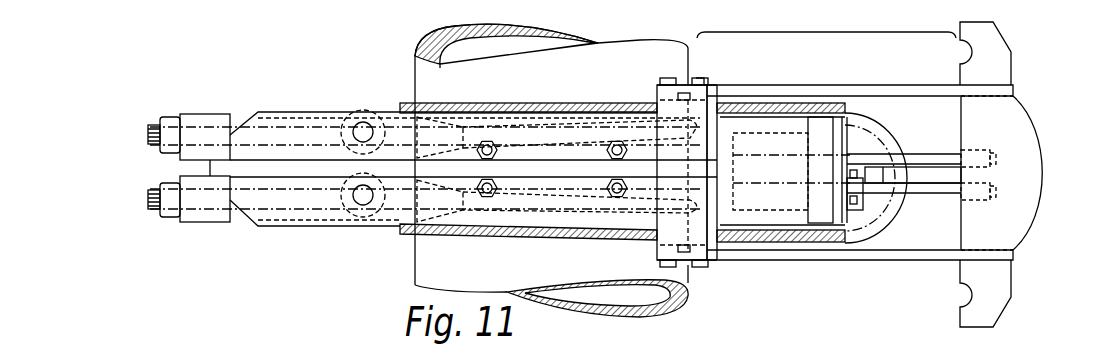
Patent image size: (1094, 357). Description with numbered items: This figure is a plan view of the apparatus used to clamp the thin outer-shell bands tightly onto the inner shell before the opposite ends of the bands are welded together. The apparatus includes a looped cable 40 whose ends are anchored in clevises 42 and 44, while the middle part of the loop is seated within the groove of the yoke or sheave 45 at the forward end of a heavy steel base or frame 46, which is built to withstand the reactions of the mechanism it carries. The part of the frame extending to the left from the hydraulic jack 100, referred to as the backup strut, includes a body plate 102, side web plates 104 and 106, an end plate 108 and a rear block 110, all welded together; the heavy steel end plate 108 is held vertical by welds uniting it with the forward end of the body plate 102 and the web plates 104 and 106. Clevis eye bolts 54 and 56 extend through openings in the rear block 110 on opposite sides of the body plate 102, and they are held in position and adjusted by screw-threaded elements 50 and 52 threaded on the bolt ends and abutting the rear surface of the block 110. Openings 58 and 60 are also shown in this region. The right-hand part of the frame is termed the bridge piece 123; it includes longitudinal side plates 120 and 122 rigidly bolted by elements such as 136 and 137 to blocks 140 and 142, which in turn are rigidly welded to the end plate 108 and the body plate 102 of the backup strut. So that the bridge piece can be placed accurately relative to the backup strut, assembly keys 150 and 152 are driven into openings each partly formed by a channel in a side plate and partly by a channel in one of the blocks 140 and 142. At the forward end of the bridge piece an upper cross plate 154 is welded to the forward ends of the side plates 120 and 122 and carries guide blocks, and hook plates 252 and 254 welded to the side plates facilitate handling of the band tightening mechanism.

The looped cable 40 is at (778, 106).
The clevis 42 is at (453, 234).
The clevis 44 is at (462, 114).
The yoke or sheave 45 is at (876, 138).
The base or frame 46 is at (919, 252).
The screw-threaded element 50 is at (172, 118).
The screw-threaded element 52 is at (172, 218).
The clevis eye bolt 54 is at (272, 125).
The clevis eye bolt 56 is at (262, 220).
The lower opening 58 is at (364, 218).
The upper opening 60 is at (365, 130).
The hydraulic jack 100 is at (780, 220).
The body plate 102 is at (540, 183).
The side web plate 104 is at (318, 228).
The side web plate 106 is at (256, 112).
The end plate 108 is at (712, 118).
The rear block 110 is at (218, 222).
The longitudinal side plate 120 is at (884, 91).
The longitudinal side plate 122 is at (895, 260).
The bridge piece 123 is at (836, 32).
The bolting element 136 is at (660, 85).
The bolting element 137 is at (698, 78).
The block 140 is at (638, 108).
The block 142 is at (663, 229).
The assembly key 150 is at (683, 93).
The assembly key 152 is at (681, 254).
The upper cross plate 154 is at (1036, 132).
The hook plate 252 is at (1010, 52).
The hook plate 254 is at (1000, 310).